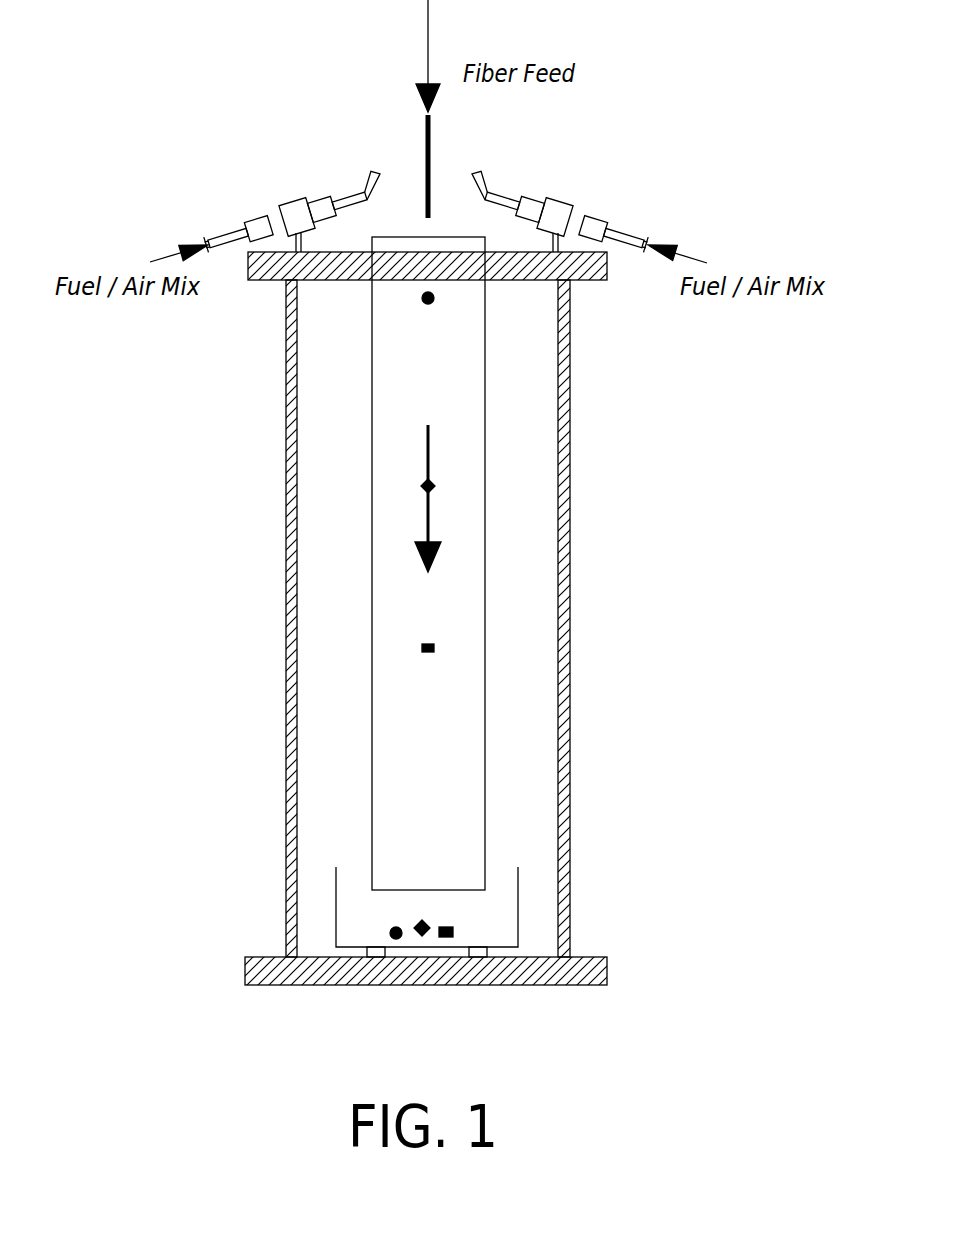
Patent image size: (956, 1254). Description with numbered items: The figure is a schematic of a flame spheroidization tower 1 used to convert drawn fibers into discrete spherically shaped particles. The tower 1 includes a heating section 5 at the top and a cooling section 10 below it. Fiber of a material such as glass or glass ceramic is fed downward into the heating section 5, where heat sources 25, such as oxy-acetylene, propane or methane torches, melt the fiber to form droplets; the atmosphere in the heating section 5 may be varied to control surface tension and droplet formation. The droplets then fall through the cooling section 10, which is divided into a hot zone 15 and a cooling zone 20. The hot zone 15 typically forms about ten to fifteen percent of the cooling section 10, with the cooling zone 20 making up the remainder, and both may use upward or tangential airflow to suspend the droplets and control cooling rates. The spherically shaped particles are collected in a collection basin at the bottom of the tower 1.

The tower 1 is at (640, 577).
The heating section 5 is at (512, 198).
The heat sources 25 is at (590, 222).
The hot zone 15 is at (485, 452).
The cooling section 10 is at (485, 738).
The cooling zone 20 is at (393, 710).